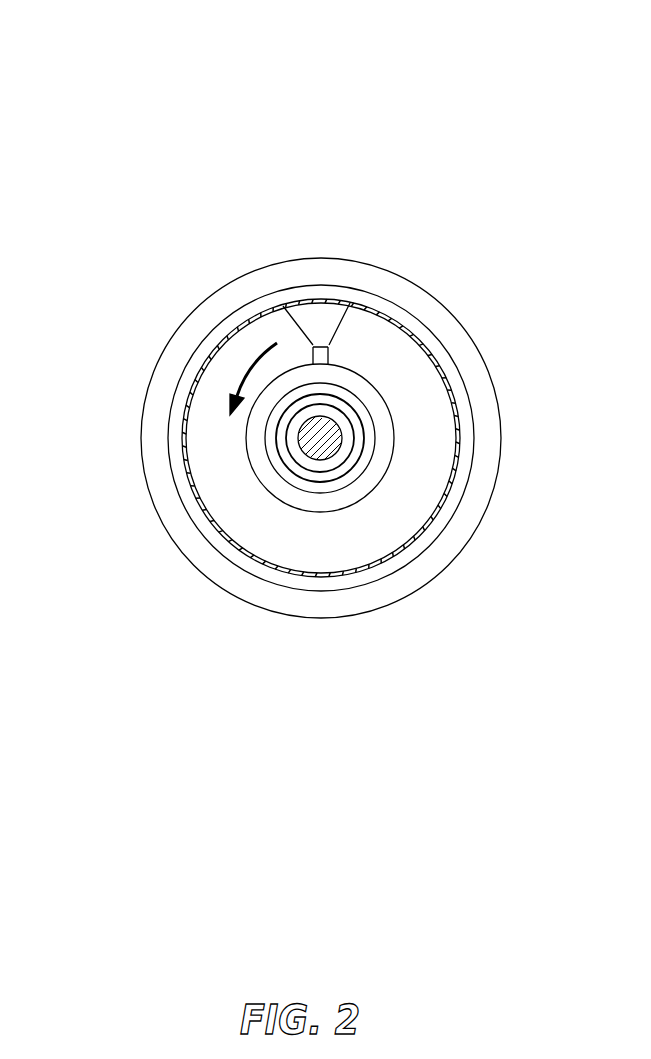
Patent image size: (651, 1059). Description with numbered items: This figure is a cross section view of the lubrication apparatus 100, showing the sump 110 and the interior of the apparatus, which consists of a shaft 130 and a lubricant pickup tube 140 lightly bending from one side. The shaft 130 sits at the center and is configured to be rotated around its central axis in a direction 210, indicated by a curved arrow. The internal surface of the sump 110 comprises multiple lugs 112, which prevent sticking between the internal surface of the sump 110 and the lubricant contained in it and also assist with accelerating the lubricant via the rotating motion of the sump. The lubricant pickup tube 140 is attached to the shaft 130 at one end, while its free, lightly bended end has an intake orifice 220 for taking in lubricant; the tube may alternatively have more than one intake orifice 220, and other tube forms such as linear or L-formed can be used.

The lubrication apparatus 100 is at (622, 48).
The sump 110 is at (260, 312).
The lugs 112 is at (188, 420).
The shaft 130 is at (311, 445).
The lubricant pickup tube 140 is at (325, 340).
The direction 210 is at (243, 372).
The intake orifice 220 is at (295, 312).